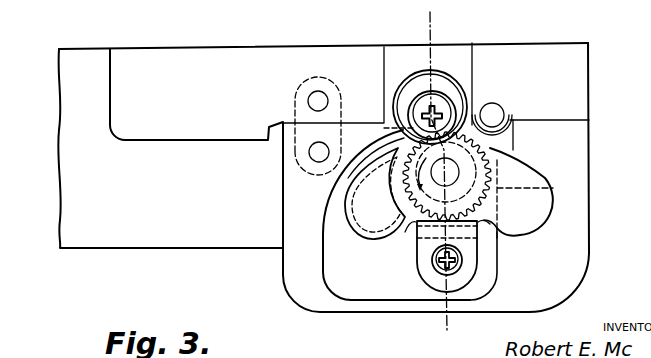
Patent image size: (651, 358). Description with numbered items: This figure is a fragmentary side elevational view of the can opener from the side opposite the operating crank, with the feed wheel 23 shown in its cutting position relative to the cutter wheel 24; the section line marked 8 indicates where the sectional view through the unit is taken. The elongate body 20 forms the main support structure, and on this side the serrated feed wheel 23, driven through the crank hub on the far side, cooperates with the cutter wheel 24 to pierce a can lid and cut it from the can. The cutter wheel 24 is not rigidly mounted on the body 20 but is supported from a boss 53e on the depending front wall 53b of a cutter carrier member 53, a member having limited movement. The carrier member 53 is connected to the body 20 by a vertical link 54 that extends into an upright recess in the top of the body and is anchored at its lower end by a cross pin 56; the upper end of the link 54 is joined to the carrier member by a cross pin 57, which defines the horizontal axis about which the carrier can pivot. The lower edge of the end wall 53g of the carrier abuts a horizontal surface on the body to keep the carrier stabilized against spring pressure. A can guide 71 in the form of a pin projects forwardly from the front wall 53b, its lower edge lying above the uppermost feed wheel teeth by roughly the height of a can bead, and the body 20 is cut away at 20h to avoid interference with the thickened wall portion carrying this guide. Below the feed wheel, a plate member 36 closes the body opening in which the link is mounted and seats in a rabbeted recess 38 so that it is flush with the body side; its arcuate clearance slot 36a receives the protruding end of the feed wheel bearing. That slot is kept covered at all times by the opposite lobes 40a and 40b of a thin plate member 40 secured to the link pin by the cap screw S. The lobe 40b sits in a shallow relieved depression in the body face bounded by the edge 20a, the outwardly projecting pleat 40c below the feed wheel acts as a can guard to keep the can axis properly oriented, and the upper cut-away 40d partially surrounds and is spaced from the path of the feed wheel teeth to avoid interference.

The elongate body 20 is at (125, 252).
The cutter carrier member 53 is at (211, 46).
The depending front wall 53b is at (270, 58).
The boss 53e is at (398, 64).
The end wall 53g is at (592, 70).
The cross pin 57 is at (309, 101).
The vertical link 54 is at (297, 152).
The cross pin 56 is at (318, 163).
The cutter wheel 24 is at (455, 90).
The can guide 71 is at (504, 113).
The cut-away 20h is at (513, 139).
The thin plate member 40 is at (536, 173).
The lobe 40a is at (346, 229).
The lobe 40b is at (533, 237).
The pleat or fold 40c is at (419, 264).
The cut-away 40d is at (481, 187).
The feed wheel 23 is at (481, 198).
The edge 20a is at (541, 228).
The plate member 36 is at (330, 266).
The arcuate clearance slot 36a is at (388, 243).
The rabbeted recess 38 is at (422, 297).
The cap screw S is at (498, 273).
The section line 8- 8 is at (430, 13).